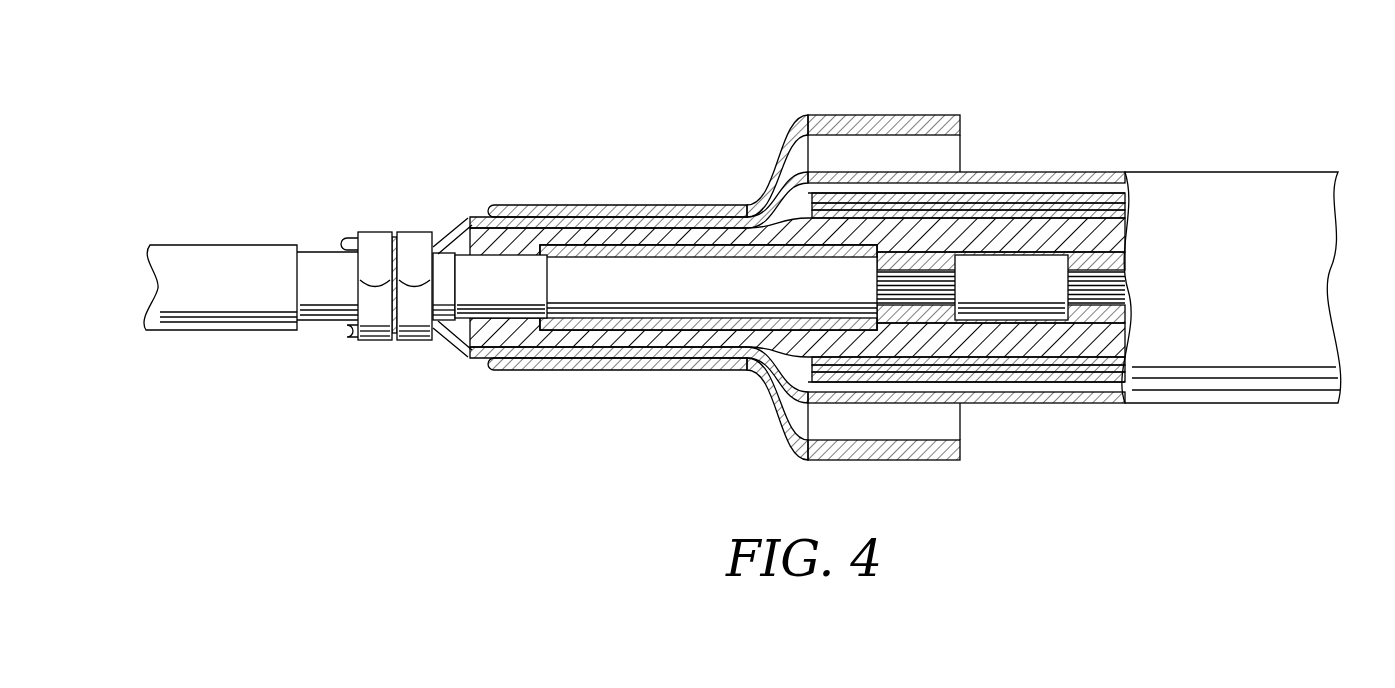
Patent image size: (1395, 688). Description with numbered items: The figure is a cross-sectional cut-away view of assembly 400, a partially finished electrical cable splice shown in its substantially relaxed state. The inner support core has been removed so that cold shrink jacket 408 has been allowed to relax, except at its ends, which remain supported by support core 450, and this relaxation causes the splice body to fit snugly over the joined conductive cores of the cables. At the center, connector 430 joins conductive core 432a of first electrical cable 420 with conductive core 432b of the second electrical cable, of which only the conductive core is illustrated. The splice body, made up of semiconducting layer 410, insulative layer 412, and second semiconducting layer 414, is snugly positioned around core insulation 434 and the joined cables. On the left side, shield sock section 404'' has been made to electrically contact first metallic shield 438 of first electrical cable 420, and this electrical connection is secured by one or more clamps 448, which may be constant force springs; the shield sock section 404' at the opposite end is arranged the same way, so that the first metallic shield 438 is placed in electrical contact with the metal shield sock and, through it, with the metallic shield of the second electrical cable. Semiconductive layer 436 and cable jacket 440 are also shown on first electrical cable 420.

The assembly 400 is at (1262, 57).
The shield sock section 404' is at (968, 247).
The shield sock section 404'' is at (574, 289).
The cold shrink jacket 408 is at (1002, 172).
The semiconducting layer 410 is at (585, 257).
The insulative layer 412 is at (772, 173).
The second semiconducting layer 414 is at (925, 262).
The first electrical cable 420 is at (134, 257).
The connector 430 is at (1060, 267).
The conductive core 432a is at (913, 295).
The conductive core 432b is at (1080, 300).
The core insulation 434 is at (685, 290).
The semiconductive layer 436 is at (493, 268).
The first metallic shield 438 is at (319, 260).
The cable jacket 440 is at (219, 262).
The clamp 448 is at (380, 240).
The support core 450 is at (845, 148).